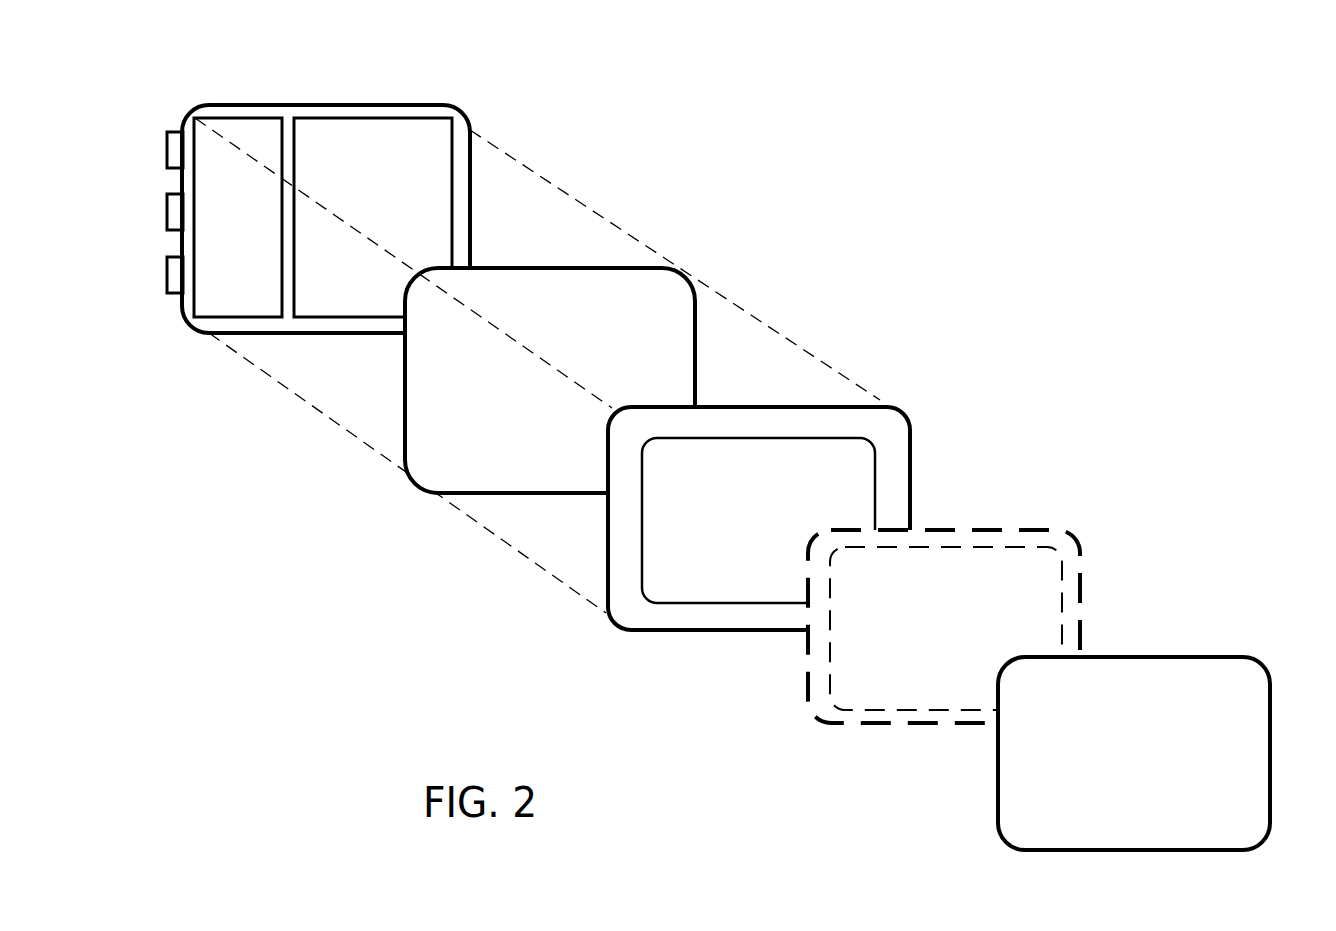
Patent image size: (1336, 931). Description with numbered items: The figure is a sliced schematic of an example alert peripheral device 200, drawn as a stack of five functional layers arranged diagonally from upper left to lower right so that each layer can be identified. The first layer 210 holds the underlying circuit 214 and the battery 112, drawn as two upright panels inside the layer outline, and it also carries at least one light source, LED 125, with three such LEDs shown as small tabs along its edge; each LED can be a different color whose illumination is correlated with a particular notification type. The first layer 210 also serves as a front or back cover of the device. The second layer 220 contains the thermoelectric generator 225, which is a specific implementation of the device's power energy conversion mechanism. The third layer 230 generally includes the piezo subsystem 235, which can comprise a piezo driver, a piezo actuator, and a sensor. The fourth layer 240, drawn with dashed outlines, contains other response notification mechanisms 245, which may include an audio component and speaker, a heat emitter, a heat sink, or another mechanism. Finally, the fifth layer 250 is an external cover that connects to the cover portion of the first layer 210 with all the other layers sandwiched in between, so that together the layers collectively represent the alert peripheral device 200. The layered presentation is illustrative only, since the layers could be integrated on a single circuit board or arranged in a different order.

The alert peripheral device 200 is at (137, 67).
The first layer 210 is at (289, 104).
The LED 125 is at (167, 273).
The underlying circuit 214 is at (257, 299).
The battery 112 is at (384, 305).
The second layer 220 is at (553, 268).
The thermoelectric generator 225 is at (575, 449).
The third layer 230 is at (740, 406).
The piezo subsystem 235 is at (773, 590).
The fourth layer 240 is at (1010, 530).
The other response notification mechanisms 245 is at (961, 685).
The fifth layer 250 is at (1158, 657).